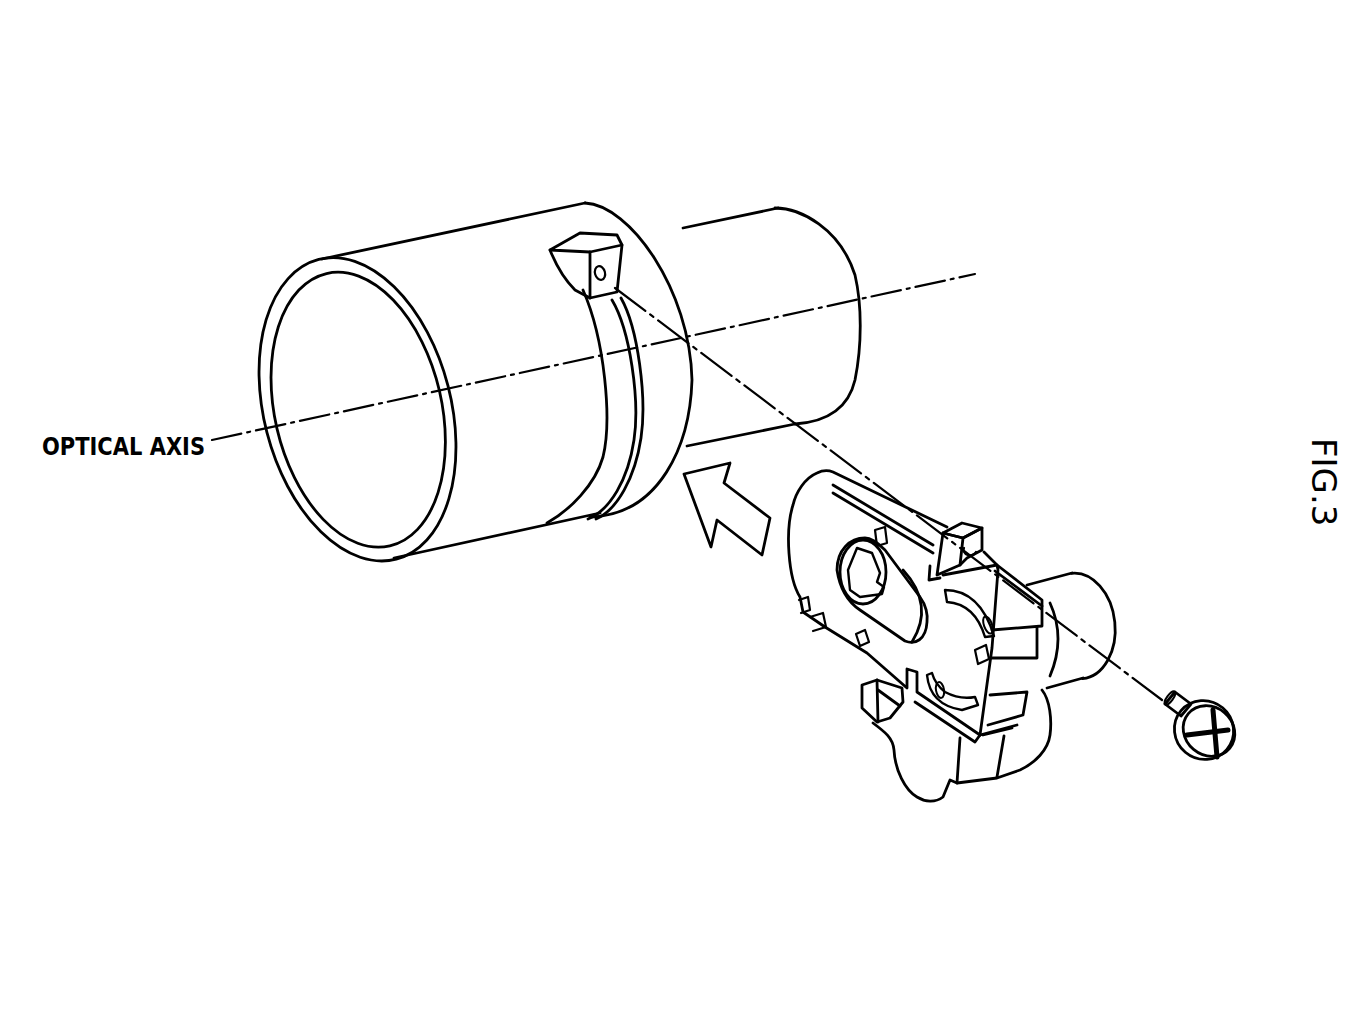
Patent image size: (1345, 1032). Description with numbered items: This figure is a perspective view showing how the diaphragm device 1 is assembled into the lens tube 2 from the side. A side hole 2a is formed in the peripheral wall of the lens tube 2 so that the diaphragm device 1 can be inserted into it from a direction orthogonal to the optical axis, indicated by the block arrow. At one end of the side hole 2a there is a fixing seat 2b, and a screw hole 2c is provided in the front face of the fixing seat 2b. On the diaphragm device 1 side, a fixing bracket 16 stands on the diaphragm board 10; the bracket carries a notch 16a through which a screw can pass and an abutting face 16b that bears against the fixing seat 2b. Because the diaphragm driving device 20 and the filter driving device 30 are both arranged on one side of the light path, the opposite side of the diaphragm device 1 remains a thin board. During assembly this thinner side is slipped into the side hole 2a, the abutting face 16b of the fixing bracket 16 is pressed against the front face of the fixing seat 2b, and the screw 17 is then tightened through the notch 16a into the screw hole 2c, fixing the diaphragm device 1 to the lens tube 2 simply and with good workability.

The diaphragm device 1 is at (794, 690).
The lens tube 2 is at (452, 232).
The side hole 2a is at (614, 328).
The fixing seat 2b is at (614, 236).
The screw hole 2c is at (588, 232).
The diaphragm board 10 is at (790, 583).
The fixing bracket 16 is at (977, 525).
The notch 16a is at (977, 551).
The abutting face 16b is at (966, 518).
The screw 17 is at (1213, 700).
The diaphragm driving device 20 is at (1086, 568).
The filter driving device 30 is at (1007, 787).